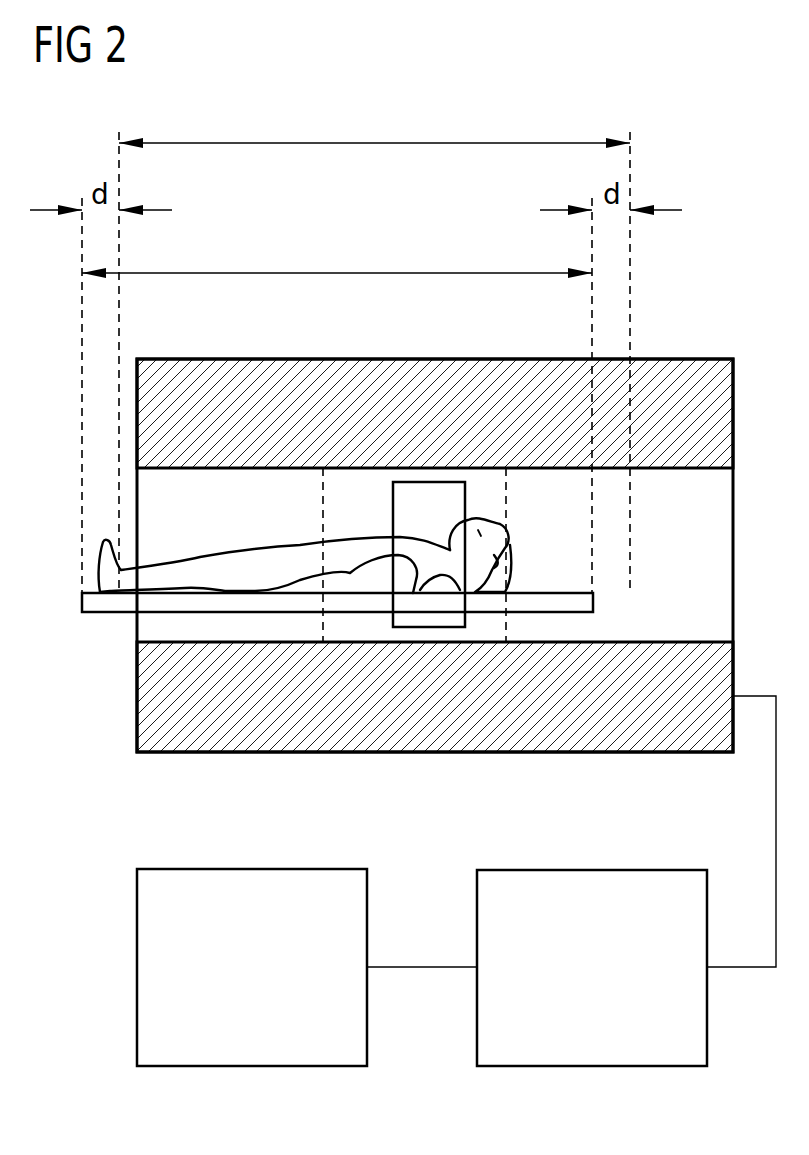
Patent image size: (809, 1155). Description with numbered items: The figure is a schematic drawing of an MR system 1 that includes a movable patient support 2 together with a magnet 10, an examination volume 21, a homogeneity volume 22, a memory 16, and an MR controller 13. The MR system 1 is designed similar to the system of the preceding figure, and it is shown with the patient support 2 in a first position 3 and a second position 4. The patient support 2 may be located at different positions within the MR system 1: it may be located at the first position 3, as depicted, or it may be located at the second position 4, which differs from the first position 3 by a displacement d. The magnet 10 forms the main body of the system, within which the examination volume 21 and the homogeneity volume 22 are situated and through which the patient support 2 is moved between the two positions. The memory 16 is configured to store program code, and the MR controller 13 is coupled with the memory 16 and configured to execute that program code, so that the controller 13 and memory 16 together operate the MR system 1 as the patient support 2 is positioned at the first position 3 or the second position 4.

The MR system 1 is at (705, 316).
The movable patient support 2 is at (80, 604).
The first position 3 is at (374, 128).
The second position 4 is at (337, 256).
The magnet 10 is at (430, 380).
The MR controller 13 is at (590, 870).
The memory 16 is at (250, 869).
The examination volume 21 is at (393, 523).
The homogeneity volume 22 is at (508, 509).